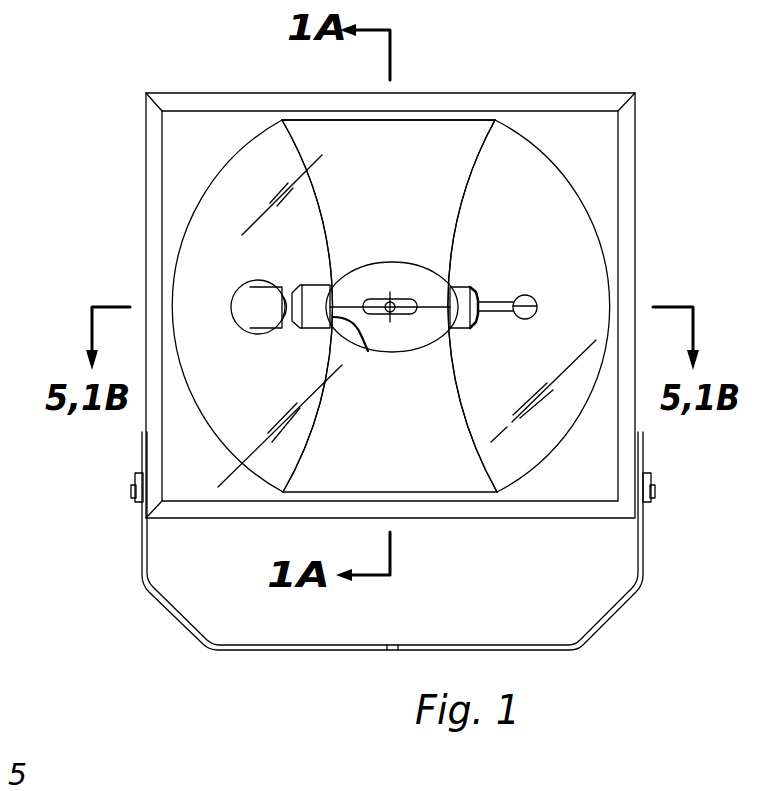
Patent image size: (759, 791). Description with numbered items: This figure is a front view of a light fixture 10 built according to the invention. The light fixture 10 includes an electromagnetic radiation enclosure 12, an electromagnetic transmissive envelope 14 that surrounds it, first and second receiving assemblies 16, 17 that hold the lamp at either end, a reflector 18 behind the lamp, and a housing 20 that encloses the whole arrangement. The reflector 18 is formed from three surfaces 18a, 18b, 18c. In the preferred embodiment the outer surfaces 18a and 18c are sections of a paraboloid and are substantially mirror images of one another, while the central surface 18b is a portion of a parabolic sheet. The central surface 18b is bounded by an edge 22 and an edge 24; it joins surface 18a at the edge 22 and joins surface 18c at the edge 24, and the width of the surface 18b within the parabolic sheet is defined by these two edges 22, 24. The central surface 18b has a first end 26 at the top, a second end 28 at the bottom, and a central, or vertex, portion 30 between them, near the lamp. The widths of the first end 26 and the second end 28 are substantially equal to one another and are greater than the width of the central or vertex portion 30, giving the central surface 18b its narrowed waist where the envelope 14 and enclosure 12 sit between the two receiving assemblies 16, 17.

The light fixture 10 is at (197, 87).
The electromagnetic radiation enclosure 12 is at (400, 298).
The electromagnetic transmissive envelope 14 is at (368, 262).
The first receiving assembly 16 is at (253, 314).
The second receiving assembly 17 is at (477, 300).
The reflector 18 is at (390, 265).
The first reflector surface 18a is at (292, 257).
The second reflector surface 18b is at (422, 171).
The third reflector surface 18c is at (537, 205).
The housing 20 is at (635, 162).
The first edge 22 is at (293, 137).
The second edge 24 is at (486, 148).
The first end 26 is at (317, 118).
The second end 28 is at (435, 492).
The central or vertex portion 30 is at (368, 351).